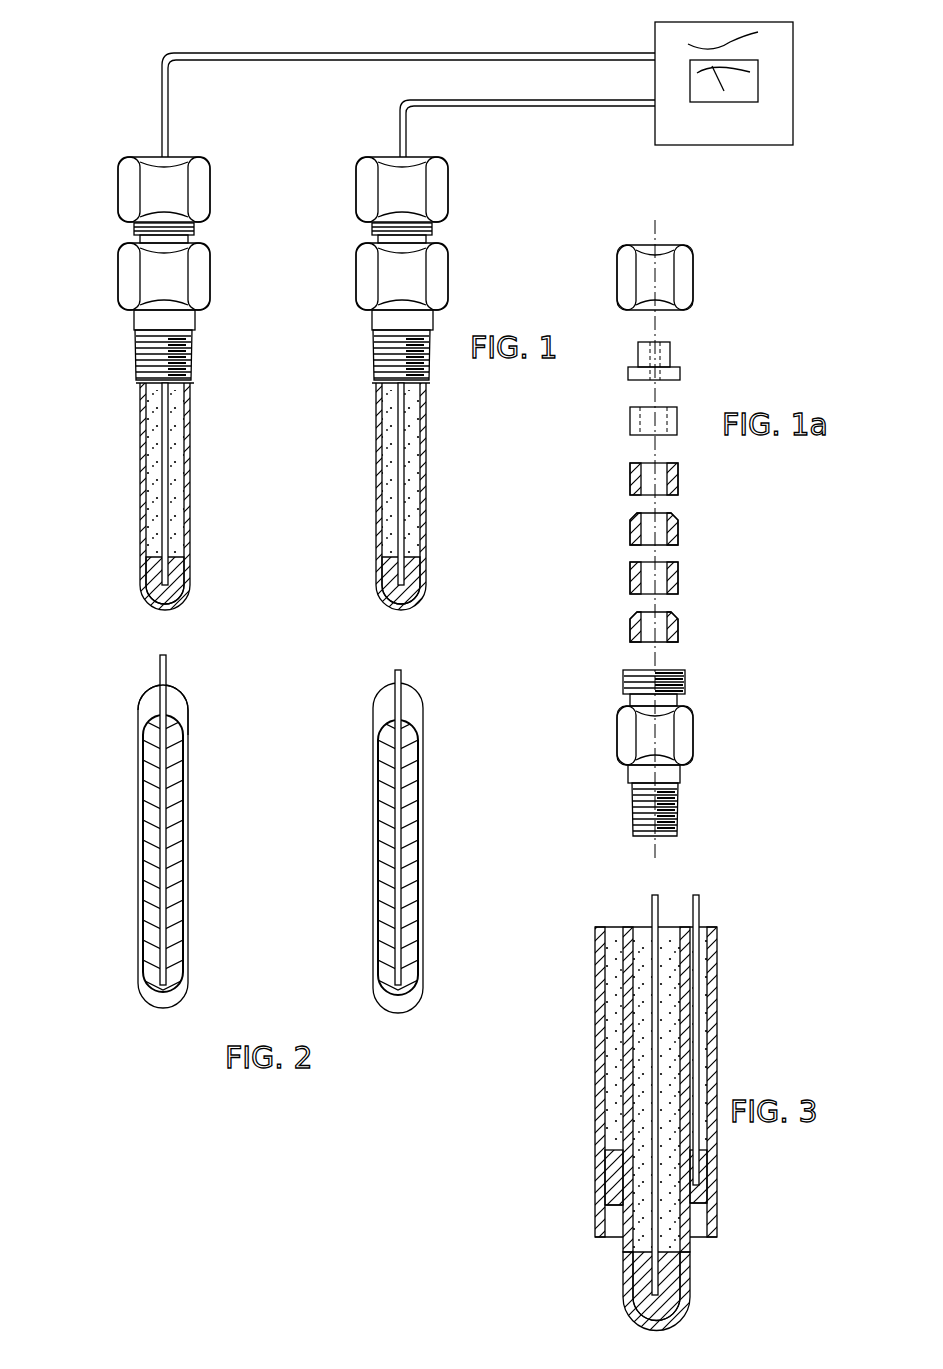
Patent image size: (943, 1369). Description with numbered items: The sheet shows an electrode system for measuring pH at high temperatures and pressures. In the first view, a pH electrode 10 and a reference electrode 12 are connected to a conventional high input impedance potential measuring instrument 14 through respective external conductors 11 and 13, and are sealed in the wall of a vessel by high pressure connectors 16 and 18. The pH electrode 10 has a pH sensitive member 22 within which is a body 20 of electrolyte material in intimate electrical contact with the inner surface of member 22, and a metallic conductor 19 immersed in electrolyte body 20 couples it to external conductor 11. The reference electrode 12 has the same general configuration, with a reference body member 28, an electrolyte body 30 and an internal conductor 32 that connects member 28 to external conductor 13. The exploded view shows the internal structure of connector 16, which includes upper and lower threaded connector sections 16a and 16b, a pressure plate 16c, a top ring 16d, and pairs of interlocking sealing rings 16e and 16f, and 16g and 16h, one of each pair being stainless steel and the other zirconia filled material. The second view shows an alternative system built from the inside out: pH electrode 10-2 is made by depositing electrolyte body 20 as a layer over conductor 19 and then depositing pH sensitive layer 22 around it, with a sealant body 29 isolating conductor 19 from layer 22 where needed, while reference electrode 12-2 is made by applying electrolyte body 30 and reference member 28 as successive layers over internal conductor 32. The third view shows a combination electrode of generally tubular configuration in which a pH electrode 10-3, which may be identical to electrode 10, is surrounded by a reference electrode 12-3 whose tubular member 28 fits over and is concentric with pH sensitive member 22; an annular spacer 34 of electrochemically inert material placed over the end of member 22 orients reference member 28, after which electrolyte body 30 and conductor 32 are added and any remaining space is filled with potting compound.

In FIG. 1, the pH electrode 10 is at (153, 383).
In FIG. 1, the external conductor 11 is at (414, 53).
In FIG. 1, the reference electrode 12 is at (417, 383).
In FIG. 1, the external conductor 13 is at (492, 106).
In FIG. 1, the potential measuring instrument 14 is at (678, 146).
In FIG. 1, the high pressure connector 16 is at (118, 257).
In FIG. 1A, the upper threaded connector section 16a is at (694, 283).
In FIG. 1A, the lower threaded connector section 16b is at (694, 735).
In FIG. 1A, the pressure plate 16c is at (672, 355).
In FIG. 1A, the top ring 16d is at (678, 430).
In FIG. 1A, the sealing ring 16e is at (679, 487).
In FIG. 1A, the sealing ring 16f is at (679, 537).
In FIG. 1A, the sealing ring 16g is at (679, 587).
In FIG. 1A, the sealing ring 16h is at (679, 635).
In FIG. 1, the high pressure connector 18 is at (448, 250).
In FIG. 1, the metallic conductor 19 is at (172, 432).
In FIG. 2, the metallic conductor 19 is at (170, 795).
In FIG. 3, the metallic conductor 19 is at (652, 908).
In FIG. 1, the electrolyte body 20 is at (182, 571).
In FIG. 2, the electrolyte body 20 is at (185, 862).
In FIG. 3, the electrolyte body 20 is at (691, 1270).
In FIG. 1, the pH sensitive member 22 is at (143, 520).
In FIG. 2, the pH sensitive member 22 is at (188, 955).
In FIG. 3, the pH sensitive member 22 is at (628, 1298).
In FIG. 1, the reference body member 28 is at (428, 455).
In FIG. 2, the reference body member 28 is at (424, 960).
In FIG. 3, the reference body member 28 is at (718, 1022).
In FIG. 2, the sealant body 29 is at (186, 700).
In FIG. 1, the electrolyte body 30 is at (416, 575).
In FIG. 2, the electrolyte body 30 is at (420, 828).
In FIG. 3, the electrolyte body 30 is at (709, 1190).
In FIG. 1, the internal conductor 32 is at (402, 467).
In FIG. 2, the internal conductor 32 is at (402, 790).
In FIG. 3, the internal conductor 32 is at (700, 905).
In FIG. 3, the annular spacer 34 is at (606, 1238).
In FIG. 2, the pH electrode 10-2 is at (142, 831).
In FIG. 2, the reference electrode 12-2 is at (442, 841).
In FIG. 3, the pH electrode 10-3 is at (678, 1111).
In FIG. 3, the reference electrode 12-3 is at (673, 1111).